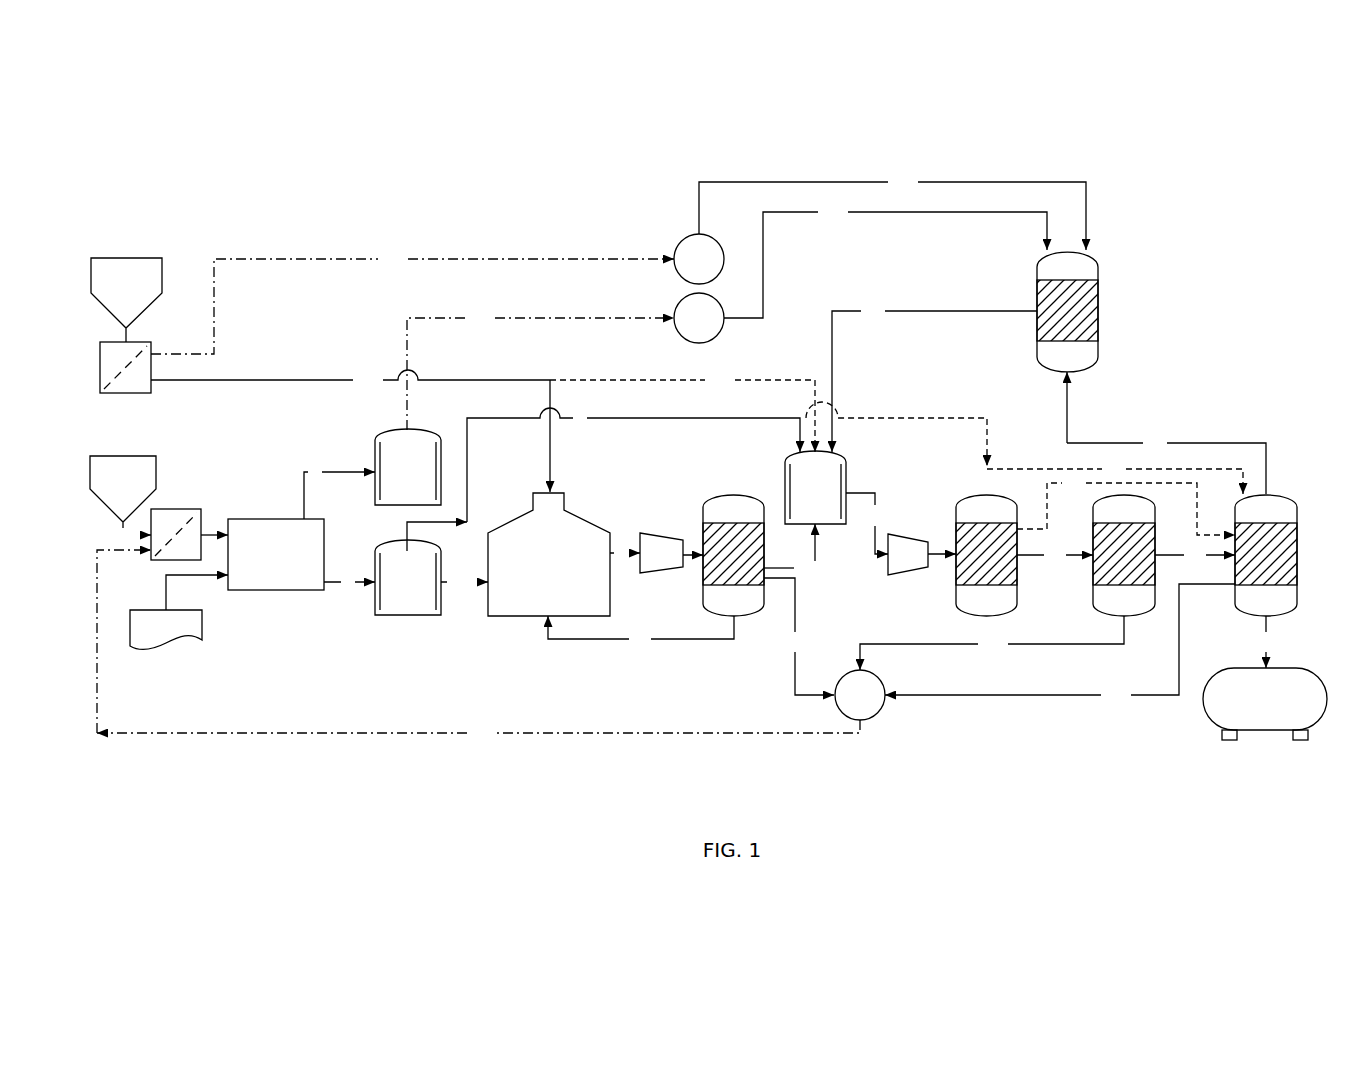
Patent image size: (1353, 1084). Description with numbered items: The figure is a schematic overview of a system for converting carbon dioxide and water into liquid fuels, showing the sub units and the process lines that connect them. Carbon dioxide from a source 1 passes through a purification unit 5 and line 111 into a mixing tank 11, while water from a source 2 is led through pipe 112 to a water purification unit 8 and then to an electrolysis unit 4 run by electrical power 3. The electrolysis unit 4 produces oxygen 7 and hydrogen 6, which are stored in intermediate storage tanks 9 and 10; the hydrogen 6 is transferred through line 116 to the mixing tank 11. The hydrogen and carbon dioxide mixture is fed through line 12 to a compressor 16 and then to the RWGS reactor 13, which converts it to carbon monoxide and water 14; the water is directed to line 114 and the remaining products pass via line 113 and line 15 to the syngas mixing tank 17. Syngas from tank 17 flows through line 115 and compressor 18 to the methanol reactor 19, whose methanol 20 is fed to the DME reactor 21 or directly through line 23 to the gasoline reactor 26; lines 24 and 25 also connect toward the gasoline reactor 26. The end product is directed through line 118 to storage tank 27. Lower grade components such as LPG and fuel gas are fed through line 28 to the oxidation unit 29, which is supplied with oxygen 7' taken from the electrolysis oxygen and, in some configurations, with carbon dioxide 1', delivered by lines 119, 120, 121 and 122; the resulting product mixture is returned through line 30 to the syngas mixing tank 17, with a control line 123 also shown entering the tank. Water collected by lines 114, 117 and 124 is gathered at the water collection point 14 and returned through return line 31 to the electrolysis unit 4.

The carbon dioxide source 1 is at (126, 300).
The carbon dioxide feed to oxidation unit 1' is at (699, 259).
The water source 2 is at (123, 492).
The electrical power 3 is at (179, 612).
The electrolysis unit 4 is at (276, 554).
The purification unit 5 is at (125, 367).
The hydrogen 6 is at (562, 499).
The oxygen 7 is at (339, 492).
The oxygen feed to oxidation unit 7' is at (699, 318).
The water purification unit 8 is at (189, 534).
The oxygen storage tank 9 is at (408, 467).
The hydrogen storage tank 10 is at (408, 577).
The mixing tank 11 is at (549, 554).
The line to compressor 12 is at (625, 553).
The RWGS reactor 13 is at (733, 555).
The water 14 is at (860, 695).
The recycle line 15 is at (641, 631).
The compressor 16 is at (671, 553).
The syngas mixing tank 17 is at (815, 487).
The compressor 18 is at (922, 554).
The methanol reactor 19 is at (986, 555).
The methanol line 20 is at (1055, 555).
The DME reactor 21 is at (1124, 555).
The methanol bypass line 23 is at (1126, 506).
The bypass line 24 is at (1024, 448).
The feed line to reactor 26 25 is at (1195, 555).
The gasoline reactor 26 is at (1266, 555).
The storage tank 27 is at (1265, 704).
The lower grade components line 28 is at (1166, 433).
The oxidation unit 29 is at (1067, 312).
The product mixture line 30 is at (934, 378).
The return line 31 is at (478, 645).
The carbon dioxide line 111 is at (350, 431).
The water line 112 is at (133, 535).
The gas line 113 is at (792, 550).
The water line from RWGS reactor 114 is at (799, 636).
The syngas line 115 is at (867, 523).
The hydrogen line 116 is at (464, 582).
The water line from gasoline reactor 117 is at (1060, 643).
The end product line 118 is at (1266, 642).
The supply line 119 is at (892, 213).
The supply line 120 is at (885, 262).
The control line 121 is at (412, 303).
The control line 122 is at (540, 371).
The control line 123 is at (682, 413).
The water line from DME reactor 124 is at (992, 643).